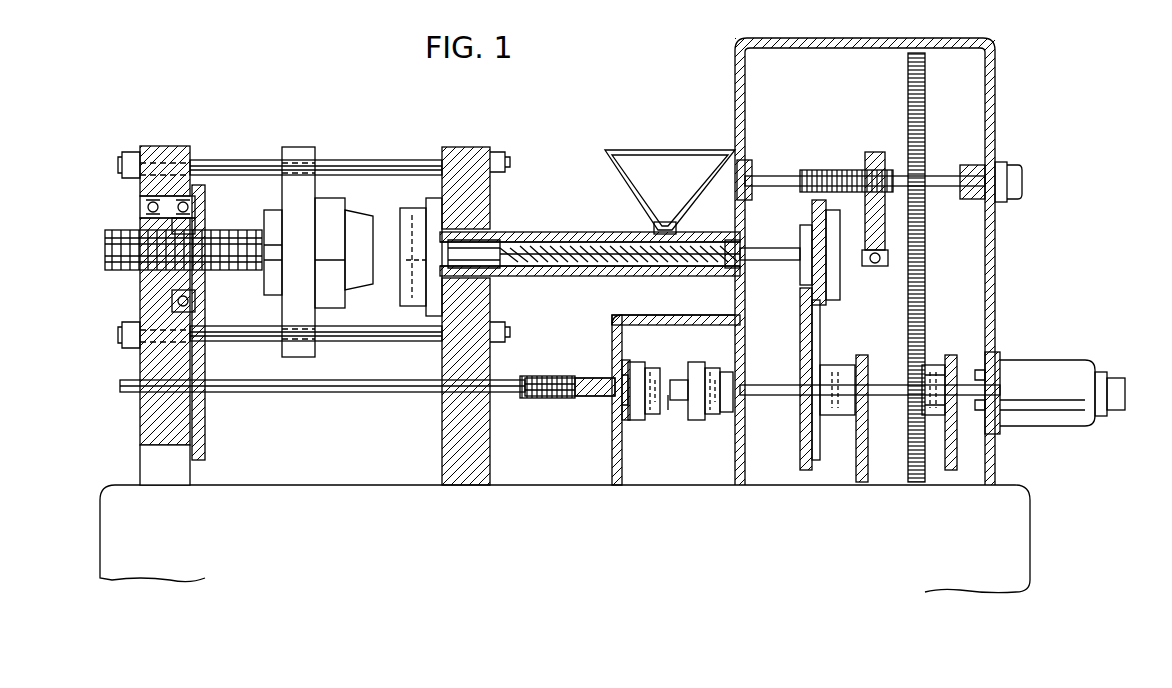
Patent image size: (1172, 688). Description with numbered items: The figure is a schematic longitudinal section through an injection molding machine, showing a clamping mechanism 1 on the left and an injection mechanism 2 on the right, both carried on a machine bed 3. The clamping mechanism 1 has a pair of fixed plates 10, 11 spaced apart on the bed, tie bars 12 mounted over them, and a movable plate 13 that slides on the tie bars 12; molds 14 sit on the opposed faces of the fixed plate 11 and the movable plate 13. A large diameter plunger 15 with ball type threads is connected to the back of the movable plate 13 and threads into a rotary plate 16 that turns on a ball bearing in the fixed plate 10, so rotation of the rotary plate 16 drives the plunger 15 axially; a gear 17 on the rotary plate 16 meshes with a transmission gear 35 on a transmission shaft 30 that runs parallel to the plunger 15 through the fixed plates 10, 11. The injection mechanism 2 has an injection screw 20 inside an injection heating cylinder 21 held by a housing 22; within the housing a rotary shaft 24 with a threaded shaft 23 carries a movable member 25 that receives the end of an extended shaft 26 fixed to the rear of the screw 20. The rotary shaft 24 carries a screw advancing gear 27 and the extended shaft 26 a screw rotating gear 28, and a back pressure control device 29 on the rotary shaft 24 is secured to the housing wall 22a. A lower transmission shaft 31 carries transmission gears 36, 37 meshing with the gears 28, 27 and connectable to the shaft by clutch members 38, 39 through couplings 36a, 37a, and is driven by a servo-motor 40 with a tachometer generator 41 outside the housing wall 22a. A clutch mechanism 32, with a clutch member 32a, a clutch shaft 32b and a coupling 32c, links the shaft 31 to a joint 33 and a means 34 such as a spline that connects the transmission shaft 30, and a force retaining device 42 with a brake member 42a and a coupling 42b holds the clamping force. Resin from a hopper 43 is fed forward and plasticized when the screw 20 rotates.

The clamping mechanism 1 is at (180, 140).
The injection mechanism 2 is at (708, 140).
The machine bed 3 is at (288, 507).
The fixed plate 10 is at (162, 185).
The fixed plate 11 is at (462, 165).
The tie bars 12 is at (380, 162).
The movable plate 13 is at (298, 192).
The molds 14 is at (350, 235).
The plunger 15 is at (232, 250).
The rotary plate 16 is at (150, 278).
The gear 17 is at (206, 300).
The injection screw 20 is at (585, 245).
The injection heating cylinder 21 is at (590, 270).
The housing 22 is at (815, 38).
The housing wall 22a is at (995, 282).
The threaded shaft 23 is at (826, 175).
The rotary shaft 24 is at (773, 182).
The movable member 25 is at (870, 155).
The extended shaft 26 is at (776, 246).
The screw advancing gear 27 is at (925, 240).
The screw rotating gear 28 is at (812, 286).
The back pressure control device 29 is at (1022, 180).
The transmission shaft 30 is at (345, 392).
The transmission shaft 31 is at (882, 385).
The clutch mechanism 32 is at (706, 350).
The clutch member 32a is at (735, 415).
The clutch shaft 32b is at (676, 412).
The coupling 32c is at (692, 412).
The joint 33 is at (548, 378).
The means 34 is at (534, 400).
The transmission gear 35 is at (205, 433).
The transmission gear 36 is at (800, 342).
The coupling 36a is at (830, 418).
The transmission gear 37 is at (908, 332).
The coupling 37a is at (937, 355).
The clutch member 38 is at (845, 418).
The clutch member 39 is at (950, 418).
The servo-motor 40 is at (1040, 375).
The tachometer generator 41 is at (1112, 412).
The force retaining device 42 is at (641, 350).
The brake member 42a is at (612, 412).
The coupling 42b is at (652, 412).
The hopper 43 is at (618, 160).